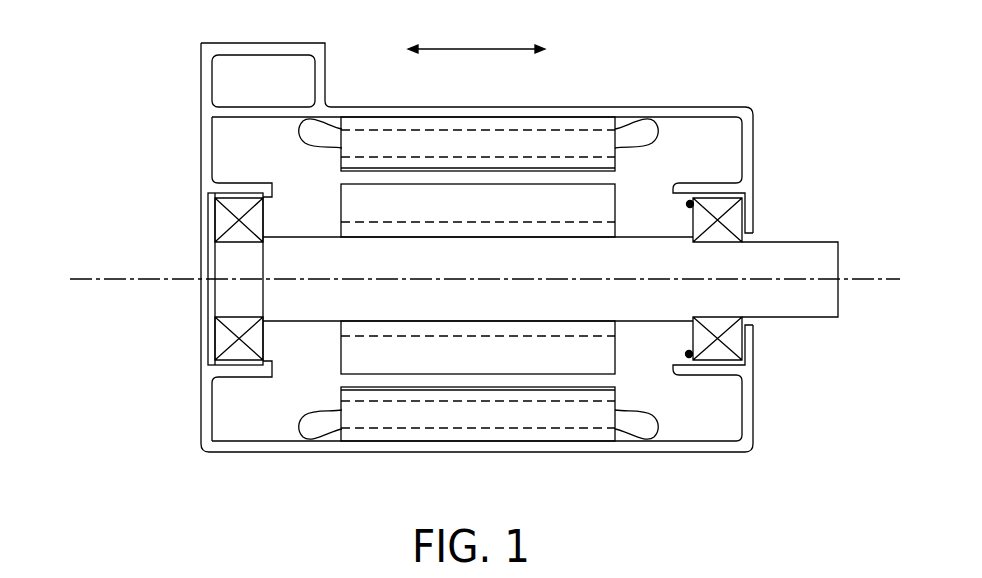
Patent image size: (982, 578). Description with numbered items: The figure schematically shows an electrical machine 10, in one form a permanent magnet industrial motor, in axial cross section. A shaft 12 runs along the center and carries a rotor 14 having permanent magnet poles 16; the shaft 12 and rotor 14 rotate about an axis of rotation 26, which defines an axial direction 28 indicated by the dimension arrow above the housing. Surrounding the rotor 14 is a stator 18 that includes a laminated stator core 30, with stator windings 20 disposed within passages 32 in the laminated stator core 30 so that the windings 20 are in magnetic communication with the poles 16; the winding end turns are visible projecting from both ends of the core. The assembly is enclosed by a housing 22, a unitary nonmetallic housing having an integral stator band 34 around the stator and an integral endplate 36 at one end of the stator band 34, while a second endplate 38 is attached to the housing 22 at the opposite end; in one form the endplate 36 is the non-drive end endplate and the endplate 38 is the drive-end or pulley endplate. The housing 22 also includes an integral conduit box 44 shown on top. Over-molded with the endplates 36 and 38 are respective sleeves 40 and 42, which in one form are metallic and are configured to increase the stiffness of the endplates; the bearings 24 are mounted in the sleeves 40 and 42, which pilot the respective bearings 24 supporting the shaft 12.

The electrical machine 10 is at (146, 51).
The shaft 12 is at (812, 242).
The rotor 14 is at (617, 345).
The permanent magnets (poles) 16 is at (617, 172).
The stator 18 is at (291, 416).
The stator windings 20 is at (657, 120).
The housing 22 is at (347, 499).
The bearings 24 is at (208, 234).
The axis of rotation 26 is at (93, 281).
The axial direction 28 is at (487, 48).
The laminated stator core 30 is at (342, 158).
The passages 32 is at (555, 432).
The stator band 34 is at (598, 105).
The endplate 36 is at (200, 407).
The second endplate 38 is at (753, 408).
The sleeve 40 is at (208, 322).
The sleeve 42 is at (687, 349).
The conduit box 44 is at (326, 65).